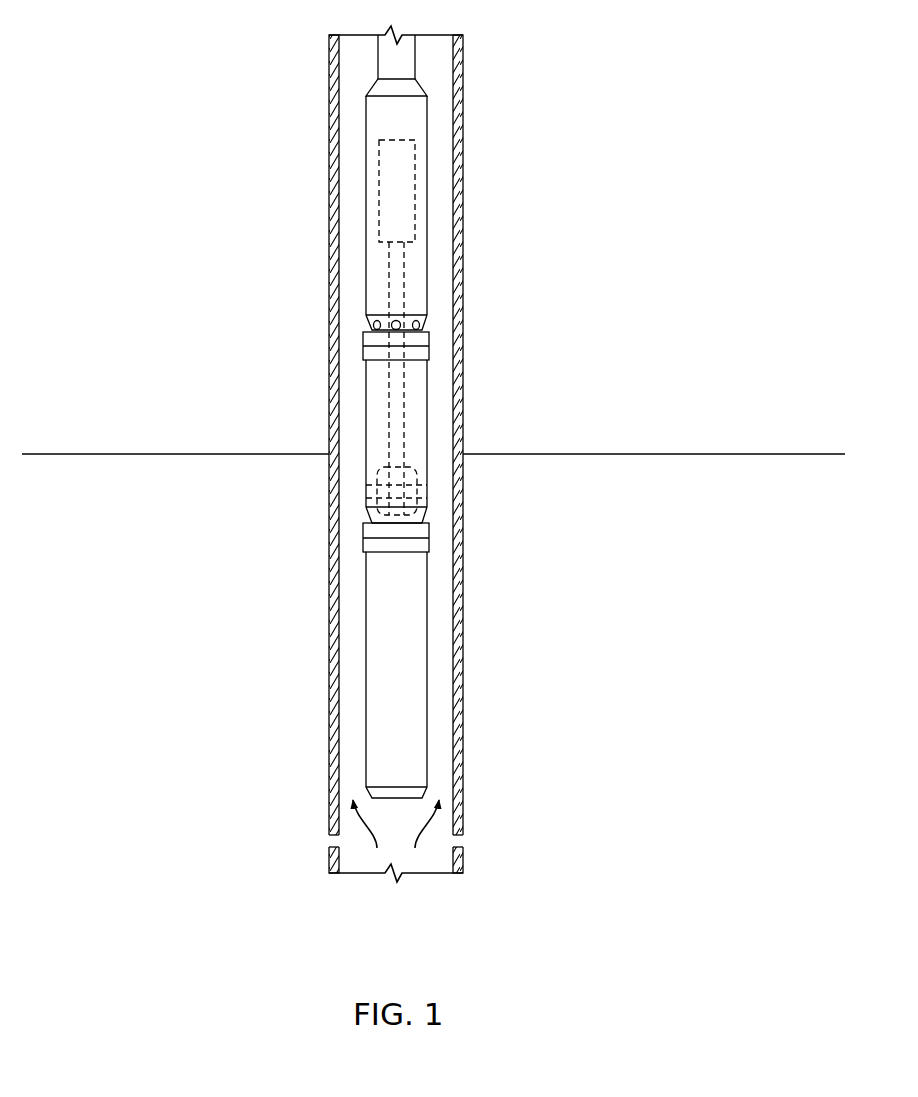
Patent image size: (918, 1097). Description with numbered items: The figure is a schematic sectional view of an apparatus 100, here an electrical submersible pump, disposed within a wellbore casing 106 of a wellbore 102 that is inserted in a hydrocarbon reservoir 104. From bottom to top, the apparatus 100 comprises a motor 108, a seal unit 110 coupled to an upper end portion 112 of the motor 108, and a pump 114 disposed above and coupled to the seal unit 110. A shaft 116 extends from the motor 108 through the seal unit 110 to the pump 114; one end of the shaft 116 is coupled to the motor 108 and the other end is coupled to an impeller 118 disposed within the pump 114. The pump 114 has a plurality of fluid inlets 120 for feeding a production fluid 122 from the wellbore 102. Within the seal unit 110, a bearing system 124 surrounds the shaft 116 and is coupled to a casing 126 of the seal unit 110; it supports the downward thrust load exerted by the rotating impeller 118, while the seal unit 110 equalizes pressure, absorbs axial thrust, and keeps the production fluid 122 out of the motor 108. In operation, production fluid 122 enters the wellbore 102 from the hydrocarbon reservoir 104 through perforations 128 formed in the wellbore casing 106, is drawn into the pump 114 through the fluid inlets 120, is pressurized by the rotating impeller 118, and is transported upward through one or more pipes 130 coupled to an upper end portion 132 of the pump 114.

The apparatus 100 is at (360, 49).
The wellbore 102 is at (432, 860).
The hydrocarbon reservoir 104 is at (674, 705).
The wellbore casing 106 is at (463, 580).
The motor 108 is at (377, 651).
The seal unit 110 is at (430, 402).
The upper end portion 112 is at (425, 523).
The pump 114 is at (430, 113).
The shaft 116 is at (387, 417).
The impeller 118 is at (380, 196).
The fluid inlets 120 is at (370, 323).
The production fluid 122 is at (358, 822).
The bearing system 124 is at (377, 489).
The casing 126 is at (430, 372).
The perforations 128 is at (460, 840).
The pipes 130 is at (386, 64).
The upper end portion 132 is at (418, 88).